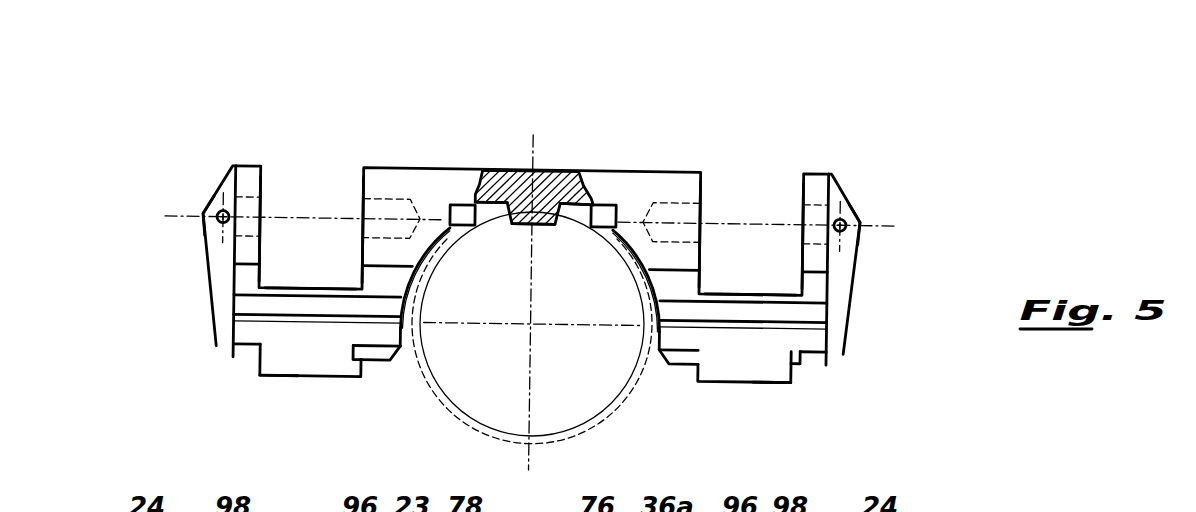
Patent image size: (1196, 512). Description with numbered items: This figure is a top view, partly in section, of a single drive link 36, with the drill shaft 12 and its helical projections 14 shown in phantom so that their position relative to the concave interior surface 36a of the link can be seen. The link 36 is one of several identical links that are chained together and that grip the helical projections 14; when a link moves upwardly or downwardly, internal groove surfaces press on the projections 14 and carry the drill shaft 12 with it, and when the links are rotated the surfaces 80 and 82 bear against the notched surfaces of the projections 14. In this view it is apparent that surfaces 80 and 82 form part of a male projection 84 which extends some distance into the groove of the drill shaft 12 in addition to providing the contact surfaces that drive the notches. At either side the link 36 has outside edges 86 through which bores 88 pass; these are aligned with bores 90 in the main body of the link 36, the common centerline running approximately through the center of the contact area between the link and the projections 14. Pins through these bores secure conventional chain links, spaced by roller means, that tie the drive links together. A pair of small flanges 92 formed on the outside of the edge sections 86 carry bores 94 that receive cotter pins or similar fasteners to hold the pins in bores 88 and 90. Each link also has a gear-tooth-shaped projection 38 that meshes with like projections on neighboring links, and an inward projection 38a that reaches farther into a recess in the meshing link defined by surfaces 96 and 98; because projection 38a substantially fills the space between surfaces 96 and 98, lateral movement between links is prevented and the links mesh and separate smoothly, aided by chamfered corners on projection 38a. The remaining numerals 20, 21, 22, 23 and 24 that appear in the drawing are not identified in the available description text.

The drill shaft 12 is at (556, 397).
The helical projections 14 is at (488, 432).
The clamp body 20 is at (808, 362).
The plate 21 is at (813, 330).
The body portion 22 is at (815, 288).
The chamfered lip 23 is at (370, 378).
The flange 24 is at (257, 370).
The drive link 36 is at (457, 168).
The concave center section 36a is at (412, 298).
The projection 38 is at (247, 334).
The inward projection 38a is at (318, 343).
The contact surface 80 is at (500, 222).
The contact surface 82 is at (560, 222).
The male projection 84 is at (513, 225).
The outside edges 86 is at (247, 162).
The bores 88 is at (810, 207).
The bores 90 is at (380, 195).
The small flanges 92 is at (205, 197).
The bores 94 is at (840, 223).
The recess surface 96 is at (353, 278).
The recess surface 98 is at (266, 278).